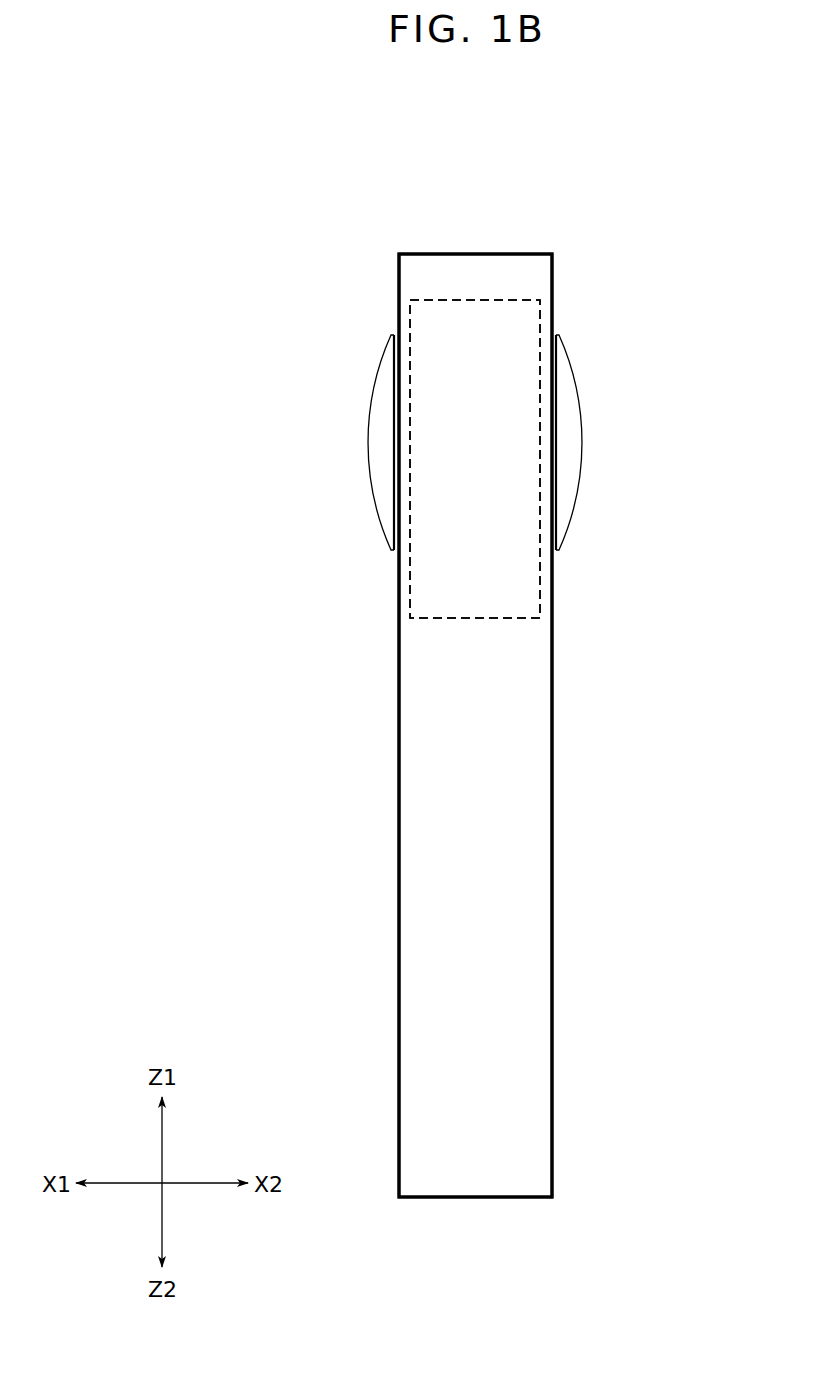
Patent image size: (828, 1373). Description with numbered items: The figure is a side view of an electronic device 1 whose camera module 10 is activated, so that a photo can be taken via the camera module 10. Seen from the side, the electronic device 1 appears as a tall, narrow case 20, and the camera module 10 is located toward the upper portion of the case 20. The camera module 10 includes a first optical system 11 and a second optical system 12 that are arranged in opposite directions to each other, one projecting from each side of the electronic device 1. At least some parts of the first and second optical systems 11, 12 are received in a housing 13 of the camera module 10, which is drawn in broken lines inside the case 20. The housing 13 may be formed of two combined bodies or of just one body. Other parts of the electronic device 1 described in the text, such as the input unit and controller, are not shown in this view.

The electronic device 1 is at (528, 219).
The camera module 10 is at (404, 299).
The first optical system 11 is at (362, 465).
The second optical system 12 is at (591, 464).
The housing 13 is at (438, 585).
The case 20 is at (413, 761).